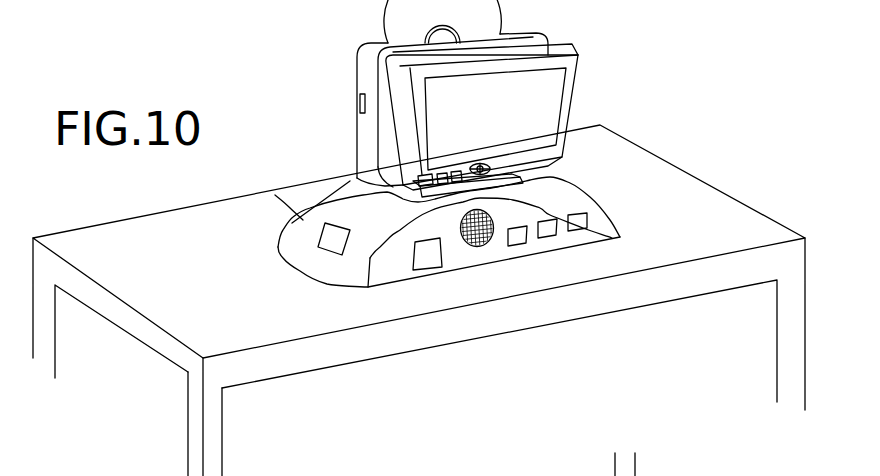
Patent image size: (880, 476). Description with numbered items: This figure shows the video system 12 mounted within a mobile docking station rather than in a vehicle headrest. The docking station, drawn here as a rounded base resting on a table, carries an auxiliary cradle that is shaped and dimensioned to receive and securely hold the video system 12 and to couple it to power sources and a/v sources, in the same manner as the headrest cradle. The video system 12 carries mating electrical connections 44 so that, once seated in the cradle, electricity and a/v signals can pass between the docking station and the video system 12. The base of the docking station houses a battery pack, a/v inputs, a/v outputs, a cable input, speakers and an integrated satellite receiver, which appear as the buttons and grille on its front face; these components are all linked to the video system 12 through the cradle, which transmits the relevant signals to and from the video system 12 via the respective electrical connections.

The video system 12 is at (368, 70).
The mating electrical connections 44 is at (352, 188).